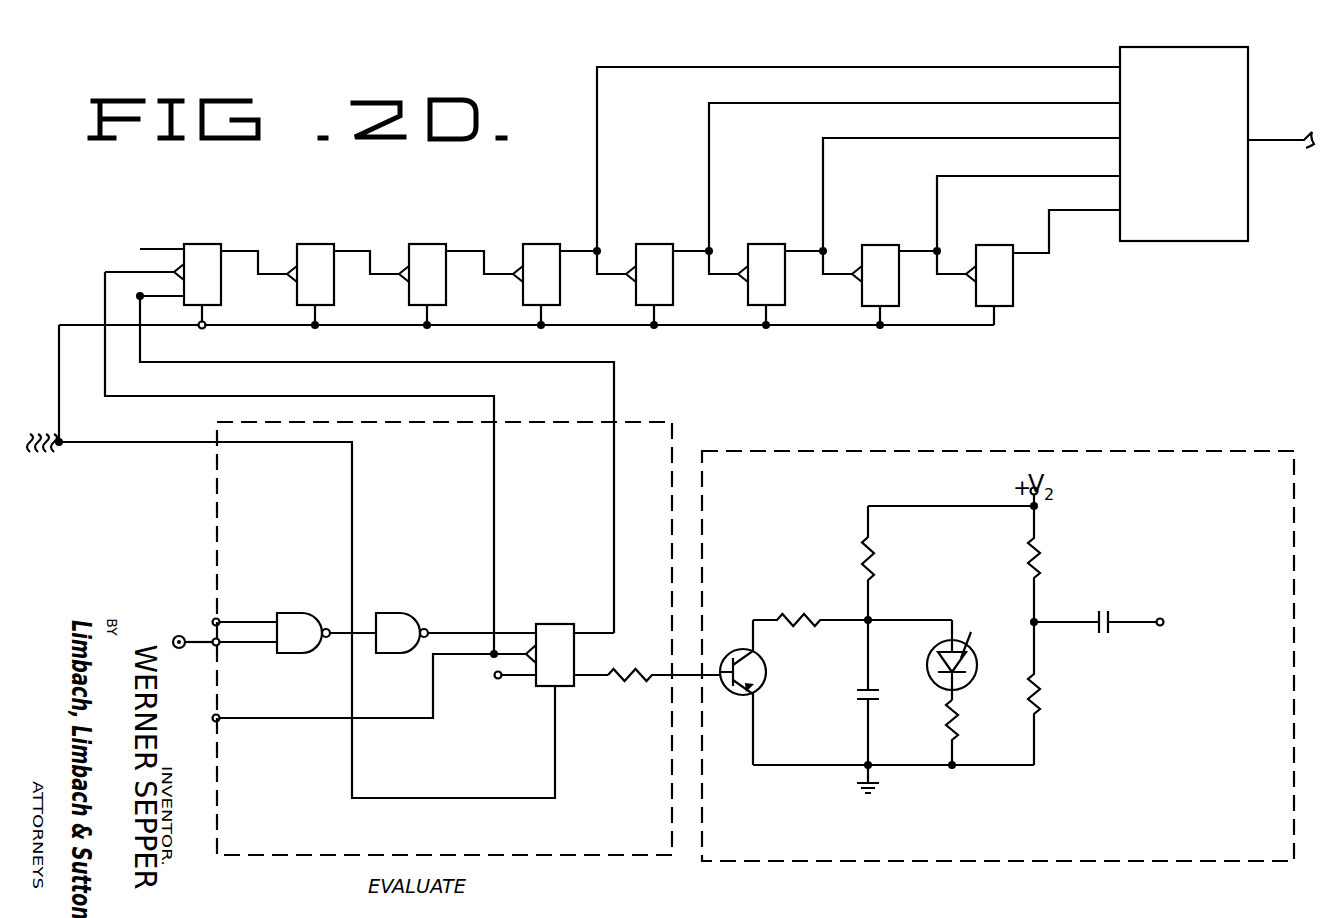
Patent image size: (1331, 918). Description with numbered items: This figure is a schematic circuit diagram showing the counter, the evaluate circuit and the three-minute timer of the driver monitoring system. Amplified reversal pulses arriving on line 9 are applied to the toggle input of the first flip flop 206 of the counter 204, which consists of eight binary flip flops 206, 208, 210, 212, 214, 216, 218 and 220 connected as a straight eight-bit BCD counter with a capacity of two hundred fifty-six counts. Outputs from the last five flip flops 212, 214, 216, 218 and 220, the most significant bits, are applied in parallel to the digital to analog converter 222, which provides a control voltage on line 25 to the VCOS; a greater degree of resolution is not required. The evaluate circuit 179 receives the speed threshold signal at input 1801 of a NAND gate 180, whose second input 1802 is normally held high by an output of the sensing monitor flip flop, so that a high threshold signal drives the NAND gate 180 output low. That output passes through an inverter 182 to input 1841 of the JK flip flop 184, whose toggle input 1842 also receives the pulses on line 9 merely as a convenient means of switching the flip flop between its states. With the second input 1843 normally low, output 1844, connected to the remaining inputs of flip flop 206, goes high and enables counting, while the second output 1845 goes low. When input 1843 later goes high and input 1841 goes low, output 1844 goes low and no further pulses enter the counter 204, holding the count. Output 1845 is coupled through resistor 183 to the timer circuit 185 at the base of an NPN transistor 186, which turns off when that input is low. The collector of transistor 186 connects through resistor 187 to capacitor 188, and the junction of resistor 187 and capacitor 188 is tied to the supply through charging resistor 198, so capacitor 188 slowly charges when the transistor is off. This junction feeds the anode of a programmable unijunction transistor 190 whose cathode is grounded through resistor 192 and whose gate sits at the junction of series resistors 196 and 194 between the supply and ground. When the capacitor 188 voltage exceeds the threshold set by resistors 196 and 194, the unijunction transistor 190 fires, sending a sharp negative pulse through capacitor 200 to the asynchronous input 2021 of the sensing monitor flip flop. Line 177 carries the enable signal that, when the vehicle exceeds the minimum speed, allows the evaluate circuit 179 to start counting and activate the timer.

The line 9 is at (213, 716).
The line 25 is at (1291, 140).
The line 177 is at (200, 632).
The evaluate circuit 179 is at (206, 537).
The NAND gate 180 is at (304, 614).
The input 1801 is at (250, 644).
The input 1802 is at (263, 621).
The inverter 182 is at (392, 614).
The resistor 183 is at (626, 670).
The JK flip flop 184 is at (567, 674).
The input 1841 is at (515, 630).
The toggle input 1842 is at (499, 664).
The second input 1843 is at (518, 678).
The output 1844 is at (596, 626).
The second output 1845 is at (585, 682).
The timer circuit 185 is at (990, 452).
The NPN transistor 186 is at (768, 677).
The resistor 187 is at (822, 605).
The capacitor 188 is at (857, 701).
The programmable unijunction transistor 190 is at (974, 672).
The resistor 192 is at (958, 729).
The resistor 194 is at (1040, 692).
The resistor 196 is at (1040, 560).
The resistor 198 is at (866, 550).
The capacitor 200 is at (1103, 610).
The asynchronous input 2021 is at (1162, 618).
The counter 204 is at (450, 188).
The flip flop 206 is at (205, 244).
The flip flop 208 is at (314, 244).
The flip flop 210 is at (426, 248).
The flip flop 212 is at (541, 248).
The flip flop 214 is at (654, 248).
The flip flop 216 is at (766, 248).
The flip flop 218 is at (881, 244).
The flip flop 220 is at (998, 233).
The digital to analog converter 222 is at (1165, 243).